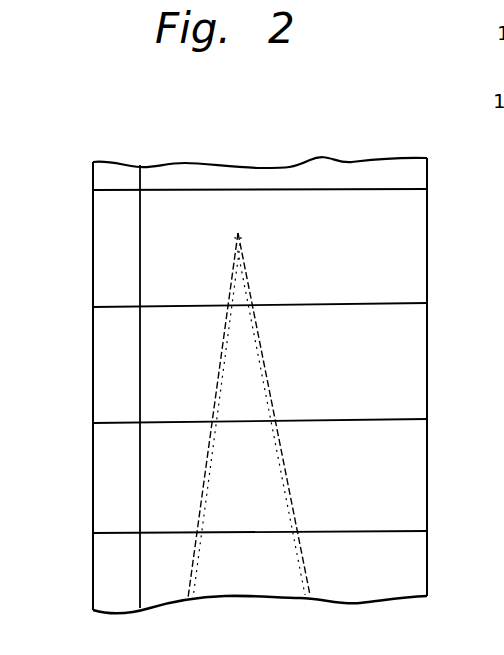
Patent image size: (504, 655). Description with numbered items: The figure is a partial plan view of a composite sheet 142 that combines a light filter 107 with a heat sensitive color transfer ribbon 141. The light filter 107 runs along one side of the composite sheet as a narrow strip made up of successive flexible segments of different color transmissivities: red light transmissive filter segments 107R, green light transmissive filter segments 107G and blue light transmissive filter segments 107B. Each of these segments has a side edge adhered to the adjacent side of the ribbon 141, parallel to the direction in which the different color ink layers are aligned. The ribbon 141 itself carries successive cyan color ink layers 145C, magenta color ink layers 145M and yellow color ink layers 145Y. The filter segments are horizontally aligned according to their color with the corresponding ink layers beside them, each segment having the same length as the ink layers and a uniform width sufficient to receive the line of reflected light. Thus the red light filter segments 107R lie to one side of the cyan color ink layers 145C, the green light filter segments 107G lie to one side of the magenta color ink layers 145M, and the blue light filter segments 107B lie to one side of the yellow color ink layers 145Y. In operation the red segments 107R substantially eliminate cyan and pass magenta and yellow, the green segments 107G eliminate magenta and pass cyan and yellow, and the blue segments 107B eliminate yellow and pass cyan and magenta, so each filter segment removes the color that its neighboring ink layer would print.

The light filter 107 is at (115, 162).
The red light transmissive filter segments 107R is at (93, 258).
The green light transmissive filter segments 107G is at (93, 375).
The blue light transmissive filter segments 107B is at (94, 490).
The heat sensitive color transfer ribbon 141 is at (302, 162).
The composite sheet 142 is at (221, 132).
The cyan color ink layers 145C is at (427, 243).
The magenta color ink layers 145M is at (427, 368).
The yellow color ink layers 145Y is at (427, 470).